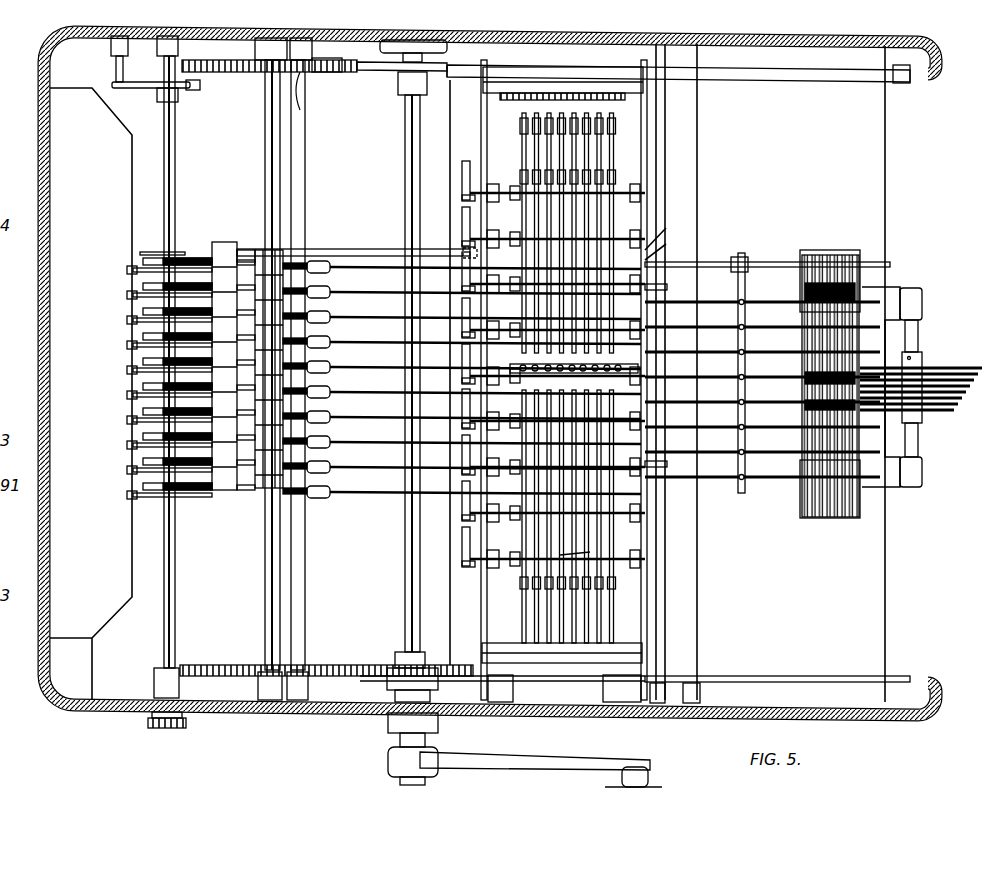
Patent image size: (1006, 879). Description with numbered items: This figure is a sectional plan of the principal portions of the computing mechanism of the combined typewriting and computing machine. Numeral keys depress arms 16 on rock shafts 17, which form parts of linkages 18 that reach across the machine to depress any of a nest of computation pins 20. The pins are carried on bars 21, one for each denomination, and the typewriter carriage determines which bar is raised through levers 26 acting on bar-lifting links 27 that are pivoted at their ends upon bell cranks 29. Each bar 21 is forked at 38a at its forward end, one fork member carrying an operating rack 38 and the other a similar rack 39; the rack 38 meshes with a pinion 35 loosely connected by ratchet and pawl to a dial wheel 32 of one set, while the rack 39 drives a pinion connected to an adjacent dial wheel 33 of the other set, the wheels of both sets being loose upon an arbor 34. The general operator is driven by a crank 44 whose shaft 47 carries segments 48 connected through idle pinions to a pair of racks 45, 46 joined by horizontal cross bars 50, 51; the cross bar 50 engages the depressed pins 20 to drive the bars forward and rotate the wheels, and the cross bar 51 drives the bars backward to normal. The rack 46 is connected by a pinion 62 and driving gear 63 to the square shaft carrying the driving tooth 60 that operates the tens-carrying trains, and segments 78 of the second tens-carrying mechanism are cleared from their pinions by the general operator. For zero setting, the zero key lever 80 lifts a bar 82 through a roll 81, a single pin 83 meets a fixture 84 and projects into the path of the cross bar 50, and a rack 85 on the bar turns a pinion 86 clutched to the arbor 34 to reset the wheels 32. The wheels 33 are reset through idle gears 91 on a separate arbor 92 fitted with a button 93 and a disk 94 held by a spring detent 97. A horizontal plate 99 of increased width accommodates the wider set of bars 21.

The arms 16 is at (462, 220).
The rock shafts 17 is at (658, 413).
The linkages 18 is at (545, 530).
The computation pins 20 is at (612, 366).
The bars 21 is at (765, 299).
The levers 26 is at (935, 372).
The link 27 is at (830, 316).
The bell cranks 29 is at (838, 255).
The dial wheels 32 is at (130, 319).
The dial wheels 33 is at (130, 344).
The arbor 34 is at (215, 245).
The pinion 35 is at (158, 252).
The operating rack 38 is at (328, 290).
The fork 38a is at (330, 270).
The rack 39 is at (330, 316).
The crank 44 is at (550, 760).
The rack 45 is at (345, 665).
The rack 46 is at (318, 72).
The shaft 47 is at (405, 563).
The segments 48 is at (368, 72).
The cross bar 50 is at (690, 208).
The cross bar 51 is at (455, 143).
The driving tooth 60 is at (330, 342).
The pinion 62 is at (250, 72).
The driving gear 63 is at (315, 74).
The segments 78 is at (300, 352).
The lever 80 is at (347, 249).
The roll 81 is at (400, 252).
The bar 82 is at (714, 262).
The pin 83 is at (668, 350).
The fixture 84 is at (669, 231).
The rack 85 is at (246, 250).
The pinion 86 is at (180, 247).
The idle gear 91 is at (130, 294).
The arbor 92 is at (175, 594).
The button 93 is at (178, 728).
The disk 94 is at (200, 93).
The spring detent 97 is at (128, 88).
The horizontal plate 99 is at (520, 250).